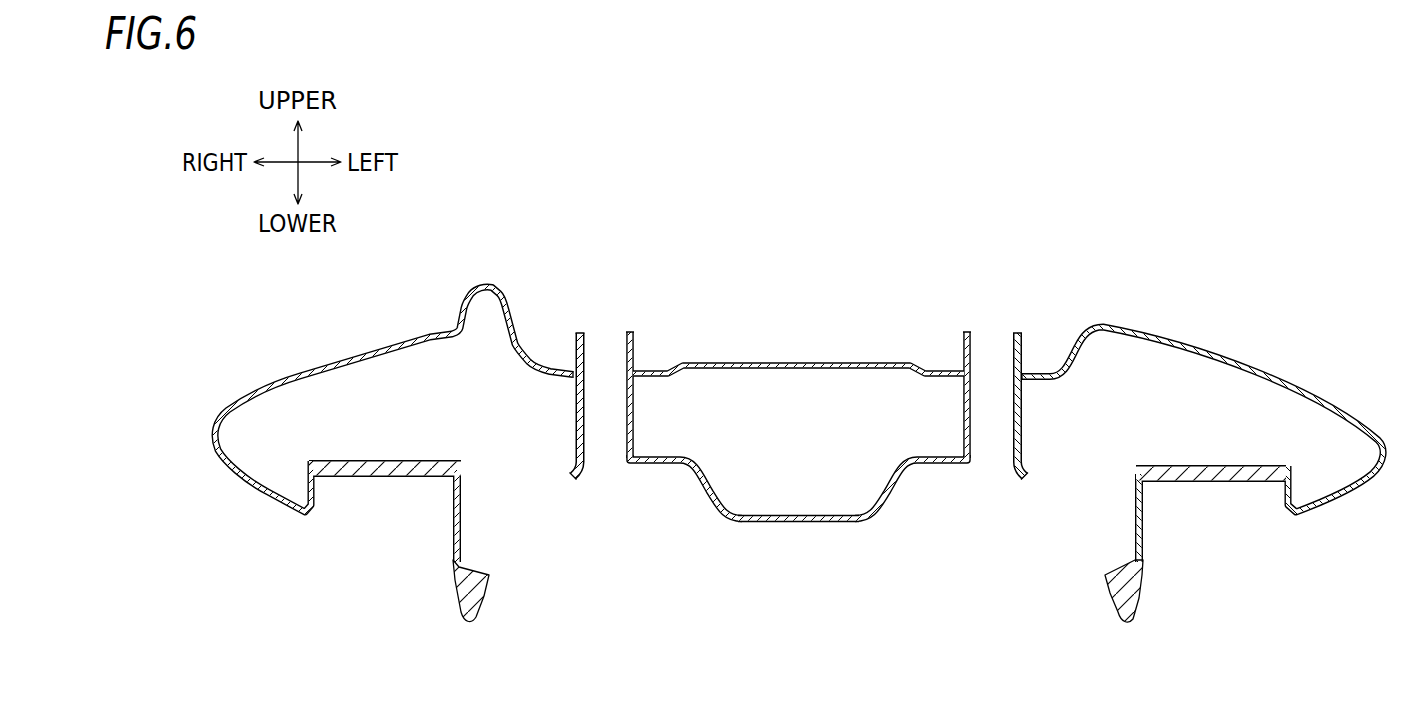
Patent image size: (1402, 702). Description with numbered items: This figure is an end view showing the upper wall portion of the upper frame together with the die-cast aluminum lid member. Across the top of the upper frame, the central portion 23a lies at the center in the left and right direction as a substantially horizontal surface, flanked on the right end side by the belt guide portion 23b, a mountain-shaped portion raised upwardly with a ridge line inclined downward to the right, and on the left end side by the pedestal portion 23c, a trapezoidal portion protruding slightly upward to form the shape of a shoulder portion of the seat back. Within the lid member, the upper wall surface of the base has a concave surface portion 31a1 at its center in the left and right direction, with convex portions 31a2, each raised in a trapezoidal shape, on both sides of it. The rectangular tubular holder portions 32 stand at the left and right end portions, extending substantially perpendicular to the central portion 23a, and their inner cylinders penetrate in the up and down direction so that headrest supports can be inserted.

The central portion 23a is at (785, 361).
The belt guide portion 23b is at (341, 357).
The pedestal portion 23c is at (1233, 356).
The holder portion 32 is at (636, 356).
The concave surface portion 31a1 is at (793, 523).
The convex portion 31a2 is at (667, 465).